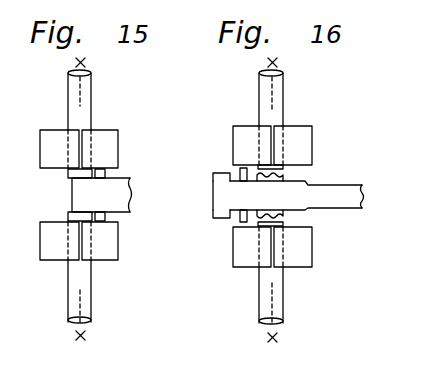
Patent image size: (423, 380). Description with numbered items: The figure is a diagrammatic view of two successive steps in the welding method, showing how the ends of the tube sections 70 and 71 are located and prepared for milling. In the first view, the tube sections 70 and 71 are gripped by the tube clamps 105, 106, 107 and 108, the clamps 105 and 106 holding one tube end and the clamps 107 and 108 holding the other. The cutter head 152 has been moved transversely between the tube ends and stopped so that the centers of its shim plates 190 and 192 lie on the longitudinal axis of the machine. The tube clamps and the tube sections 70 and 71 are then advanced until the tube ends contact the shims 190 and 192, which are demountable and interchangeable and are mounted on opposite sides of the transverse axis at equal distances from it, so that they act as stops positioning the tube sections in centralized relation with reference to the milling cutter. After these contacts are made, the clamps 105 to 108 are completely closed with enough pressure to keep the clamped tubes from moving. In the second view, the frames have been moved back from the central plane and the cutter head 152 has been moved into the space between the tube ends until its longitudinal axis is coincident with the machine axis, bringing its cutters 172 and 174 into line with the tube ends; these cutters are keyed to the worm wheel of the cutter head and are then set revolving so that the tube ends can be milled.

In FIG. 15, the tube section 70 is at (88, 89).
In FIG. 16, the tube section 70 is at (285, 87).
In FIG. 15, the tube section 71 is at (88, 282).
In FIG. 16, the tube section 71 is at (285, 310).
In FIG. 15, the tube clamp 105 is at (57, 138).
In FIG. 16, the tube clamp 105 is at (245, 132).
In FIG. 15, the tube clamp 106 is at (103, 137).
In FIG. 16, the tube clamp 106 is at (297, 135).
In FIG. 15, the tube clamp 107 is at (52, 250).
In FIG. 16, the tube clamp 107 is at (244, 255).
In FIG. 15, the tube clamp 108 is at (108, 248).
In FIG. 16, the tube clamp 108 is at (298, 258).
In FIG. 15, the cutter head 152 is at (112, 185).
In FIG. 16, the cutter head 152 is at (247, 192).
In FIG. 15, the shim 190 is at (70, 177).
In FIG. 16, the shim 190 is at (217, 171).
In FIG. 15, the shim 192 is at (70, 213).
In FIG. 16, the shim 192 is at (218, 218).
In FIG. 16, the cutter 172 is at (285, 214).
In FIG. 16, the cutter 174 is at (285, 175).